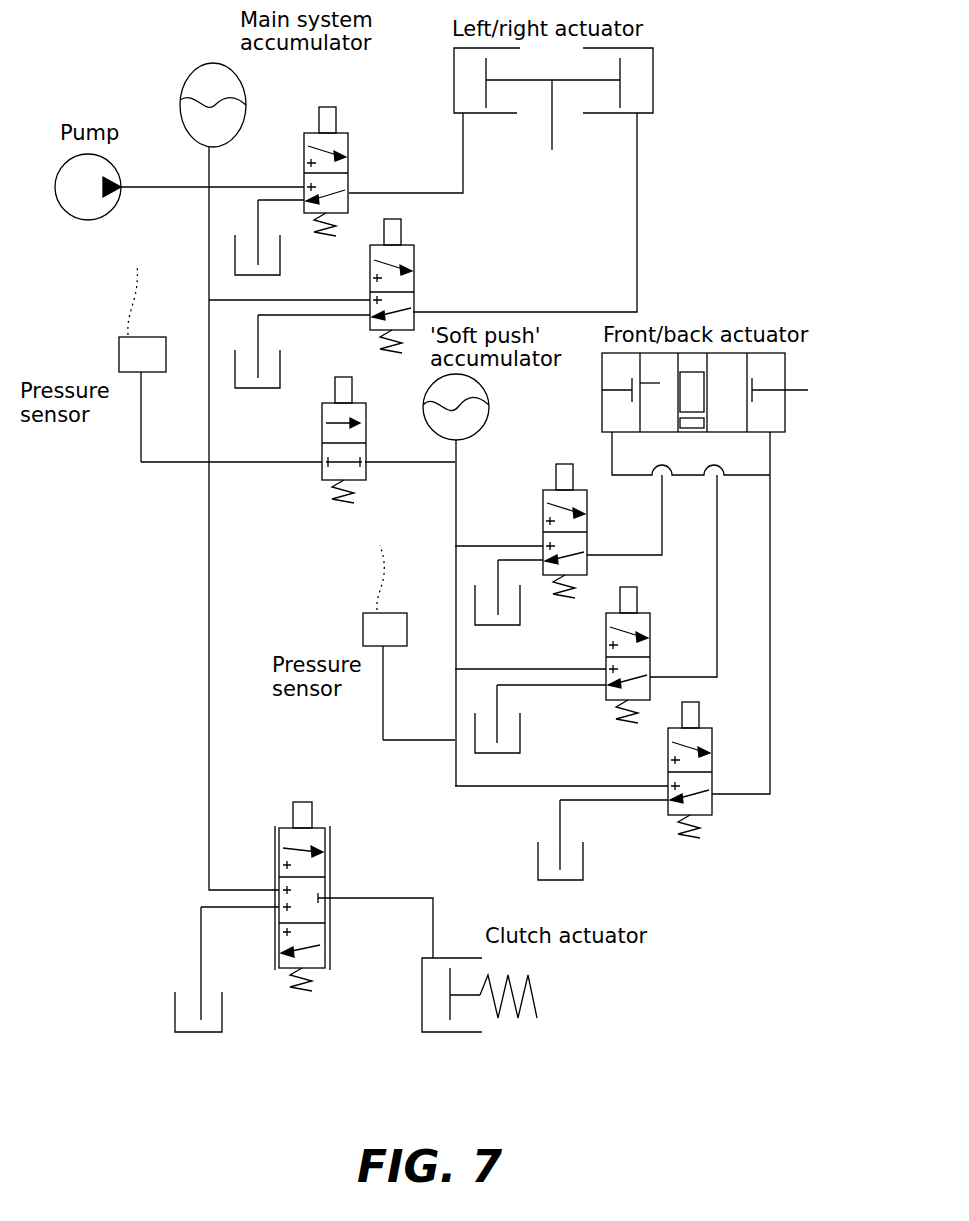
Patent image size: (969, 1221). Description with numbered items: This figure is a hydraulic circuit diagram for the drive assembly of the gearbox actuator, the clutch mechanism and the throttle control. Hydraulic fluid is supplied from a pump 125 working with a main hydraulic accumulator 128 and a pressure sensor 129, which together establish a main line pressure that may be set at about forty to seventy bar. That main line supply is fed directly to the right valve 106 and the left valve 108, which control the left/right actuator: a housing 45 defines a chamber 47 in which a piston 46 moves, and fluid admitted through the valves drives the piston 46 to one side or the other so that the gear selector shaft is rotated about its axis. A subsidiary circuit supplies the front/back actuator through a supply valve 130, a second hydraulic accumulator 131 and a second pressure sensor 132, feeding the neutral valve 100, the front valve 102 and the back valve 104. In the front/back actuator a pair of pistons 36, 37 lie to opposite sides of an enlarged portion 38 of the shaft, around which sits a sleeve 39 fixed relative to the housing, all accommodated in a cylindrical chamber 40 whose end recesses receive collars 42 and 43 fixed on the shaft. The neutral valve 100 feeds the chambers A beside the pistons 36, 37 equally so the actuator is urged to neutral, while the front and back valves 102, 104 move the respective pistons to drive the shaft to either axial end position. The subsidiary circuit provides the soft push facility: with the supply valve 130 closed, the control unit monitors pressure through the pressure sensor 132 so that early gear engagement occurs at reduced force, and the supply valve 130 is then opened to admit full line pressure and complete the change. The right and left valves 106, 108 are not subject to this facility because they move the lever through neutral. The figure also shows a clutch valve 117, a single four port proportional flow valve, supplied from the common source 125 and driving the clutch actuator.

The pump 125 is at (85, 221).
The hydraulic accumulator 128 is at (183, 120).
The hydraulic accumulator 131 is at (430, 392).
The pressure sensor 129 is at (119, 358).
The pressure sensor 132 is at (363, 628).
The right valve 106 is at (349, 140).
The left valve 108 is at (414, 255).
The supply valve 130 is at (322, 470).
The front valve 102 is at (543, 510).
The back valve 104 is at (606, 650).
The neutral valve 100 is at (718, 812).
The clutch valve 117 is at (276, 860).
The housing 45 is at (497, 118).
The piston 46 is at (620, 70).
The chamber 47 is at (553, 115).
The piston 36 is at (642, 362).
The piston 37 is at (747, 365).
The enlarged portion 38 is at (677, 408).
The sleeve 39 is at (700, 360).
The cylindrical chamber 40 is at (733, 433).
The collar 42 is at (640, 388).
The collar 43 is at (808, 393).